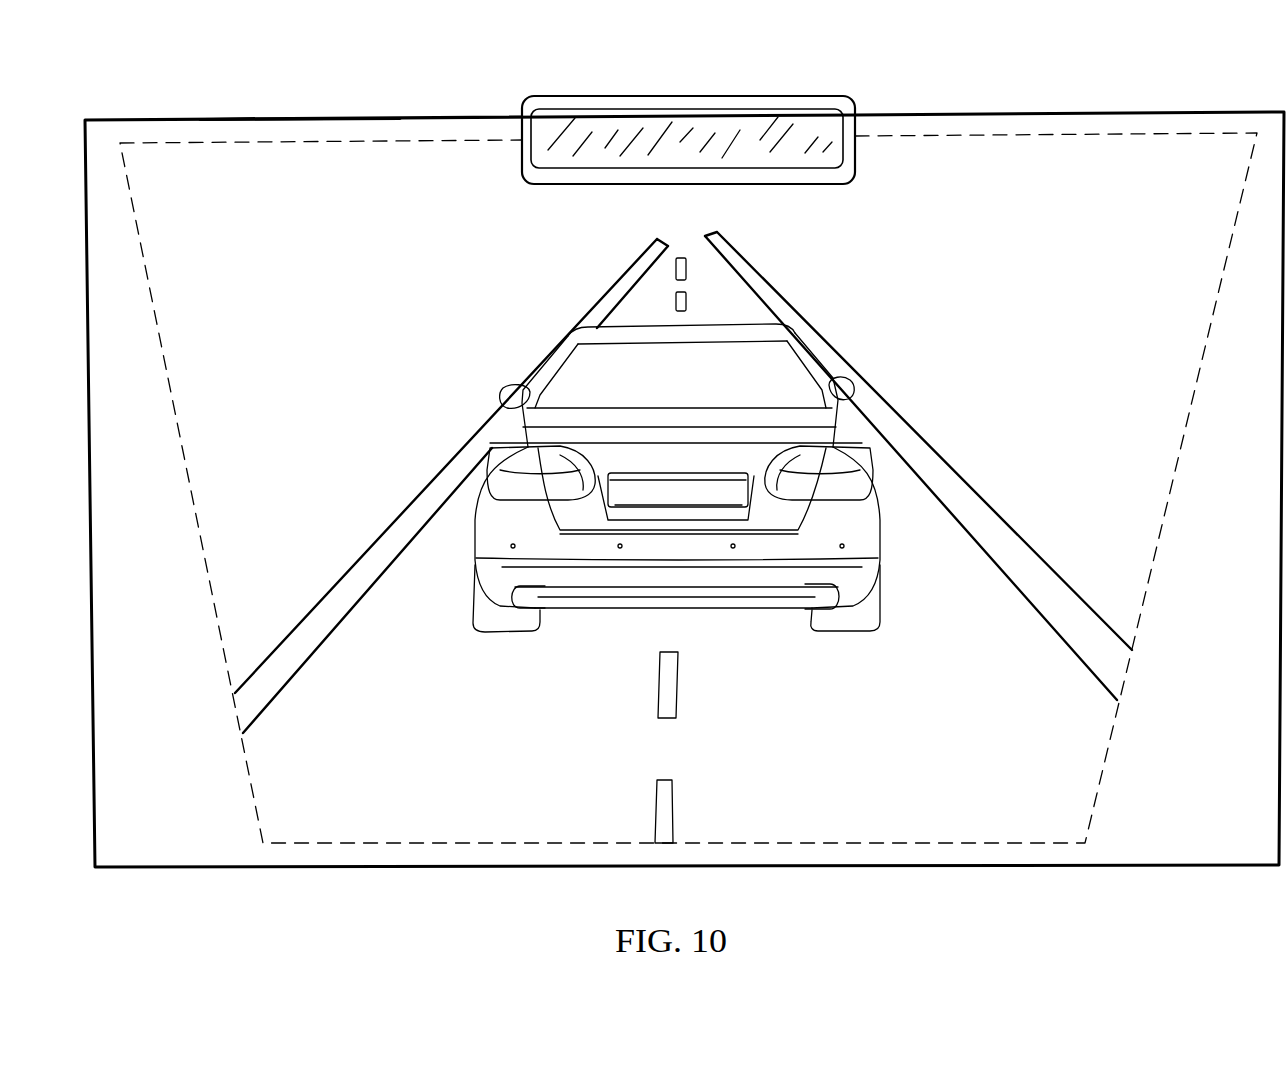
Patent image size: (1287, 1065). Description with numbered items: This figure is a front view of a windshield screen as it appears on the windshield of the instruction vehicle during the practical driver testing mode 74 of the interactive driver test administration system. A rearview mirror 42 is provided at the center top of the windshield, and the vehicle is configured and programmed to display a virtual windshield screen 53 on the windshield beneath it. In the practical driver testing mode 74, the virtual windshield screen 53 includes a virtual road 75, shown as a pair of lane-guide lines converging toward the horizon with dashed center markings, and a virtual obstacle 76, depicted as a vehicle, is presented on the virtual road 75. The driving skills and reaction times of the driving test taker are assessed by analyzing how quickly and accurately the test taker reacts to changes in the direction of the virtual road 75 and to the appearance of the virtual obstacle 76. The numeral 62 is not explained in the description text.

The practical driver testing mode 74 is at (150, 86).
The display screen 62 is at (295, 128).
The virtual windshield screen 53 is at (400, 158).
The rearview mirror 42 is at (640, 122).
The virtual road 75 is at (728, 302).
The virtual obstacle 76 is at (848, 432).